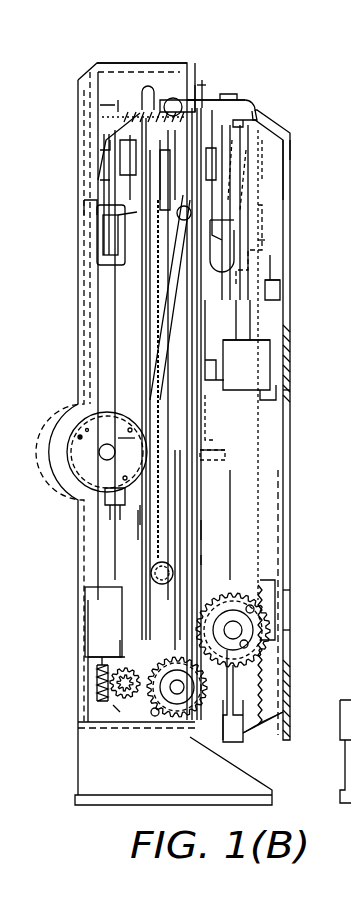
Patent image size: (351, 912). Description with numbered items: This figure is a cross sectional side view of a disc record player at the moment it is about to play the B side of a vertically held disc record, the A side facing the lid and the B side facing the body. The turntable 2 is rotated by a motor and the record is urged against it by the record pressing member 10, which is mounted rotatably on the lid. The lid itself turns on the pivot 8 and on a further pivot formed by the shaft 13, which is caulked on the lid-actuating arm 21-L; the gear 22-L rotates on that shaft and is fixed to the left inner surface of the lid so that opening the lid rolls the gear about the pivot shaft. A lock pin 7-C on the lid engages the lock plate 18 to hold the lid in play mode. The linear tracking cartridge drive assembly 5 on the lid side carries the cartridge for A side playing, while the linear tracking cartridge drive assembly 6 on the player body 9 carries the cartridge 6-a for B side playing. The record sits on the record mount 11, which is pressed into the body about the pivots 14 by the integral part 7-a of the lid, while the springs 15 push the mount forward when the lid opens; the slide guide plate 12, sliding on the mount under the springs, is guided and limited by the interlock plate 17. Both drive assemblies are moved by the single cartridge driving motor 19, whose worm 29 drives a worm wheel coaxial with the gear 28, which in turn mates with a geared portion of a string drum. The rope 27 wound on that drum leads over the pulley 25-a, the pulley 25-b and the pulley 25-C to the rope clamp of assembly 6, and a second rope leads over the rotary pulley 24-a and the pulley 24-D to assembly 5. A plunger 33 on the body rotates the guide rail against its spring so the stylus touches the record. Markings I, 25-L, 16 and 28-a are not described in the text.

The pulley 25-C is at (122, 112).
The player body 9 is at (120, 63).
The springs 15 is at (140, 113).
The B side B is at (195, 85).
The axis I is at (202, 80).
The A side A is at (200, 84).
The lock plate 18 is at (250, 100).
The lock pin 7-C is at (285, 128).
The guide strip L 25-L is at (320, 150).
The linear tracking cartridge drive assembly 5 is at (258, 218).
The pivots 14 is at (263, 248).
The record pressing member 10 is at (283, 305).
The cartridge 6-a is at (223, 343).
The integral part of the lid 7-a is at (203, 450).
The stop 16 is at (215, 462).
The record mount 11 is at (203, 532).
The pulley 25-a is at (203, 560).
The rope 27 is at (203, 572).
The shaft 13 is at (236, 626).
The gear 22-L is at (315, 598).
The lid-actuating arm 21-L is at (314, 628).
The rotary pulley 24-a is at (255, 728).
The pulley 24-D is at (277, 722).
The pivot 8 is at (177, 689).
The gear 28 is at (115, 698).
The pinion shaft 28-a is at (113, 705).
The worm 29 is at (95, 682).
The cartridge driving motor 19 is at (93, 605).
The interlock plate 17 is at (138, 523).
The slide guide plate 12 is at (138, 515).
The turntable 2 is at (116, 372).
The plunger 33 is at (110, 247).
The pulley 25-b is at (137, 212).
The linear tracking cartridge drive assembly 6 is at (83, 208).